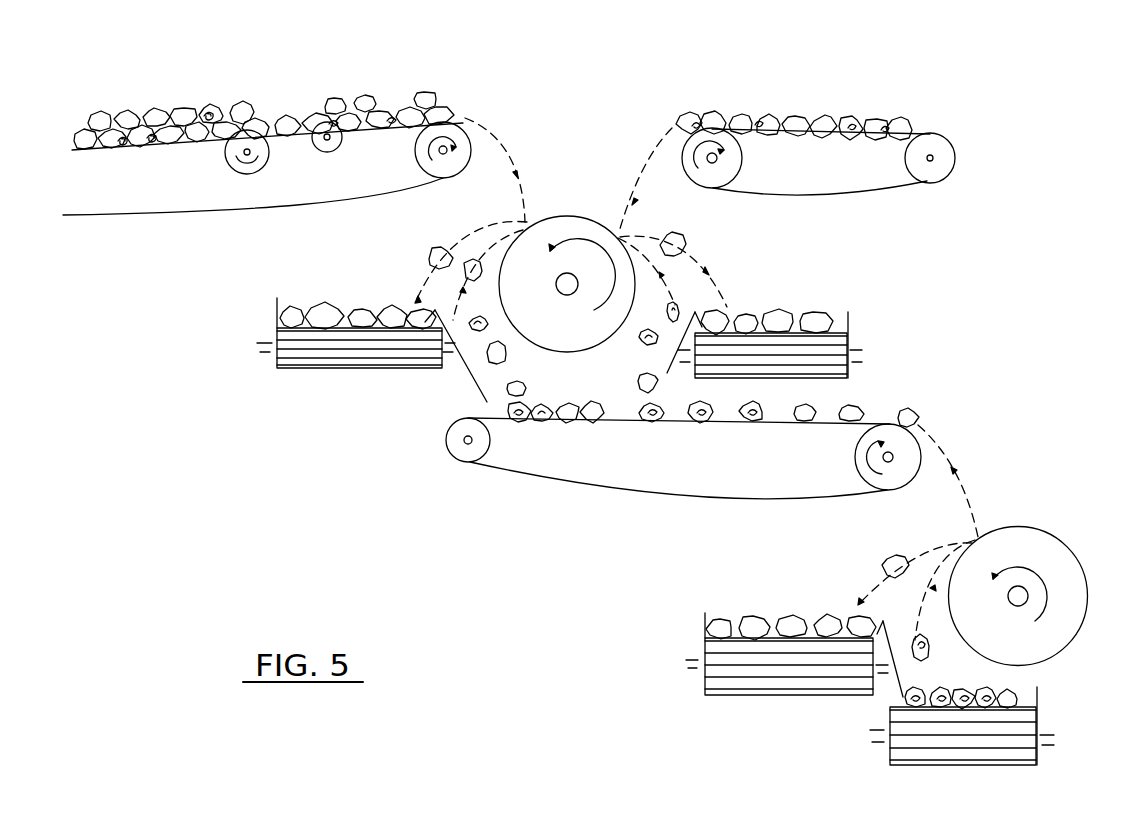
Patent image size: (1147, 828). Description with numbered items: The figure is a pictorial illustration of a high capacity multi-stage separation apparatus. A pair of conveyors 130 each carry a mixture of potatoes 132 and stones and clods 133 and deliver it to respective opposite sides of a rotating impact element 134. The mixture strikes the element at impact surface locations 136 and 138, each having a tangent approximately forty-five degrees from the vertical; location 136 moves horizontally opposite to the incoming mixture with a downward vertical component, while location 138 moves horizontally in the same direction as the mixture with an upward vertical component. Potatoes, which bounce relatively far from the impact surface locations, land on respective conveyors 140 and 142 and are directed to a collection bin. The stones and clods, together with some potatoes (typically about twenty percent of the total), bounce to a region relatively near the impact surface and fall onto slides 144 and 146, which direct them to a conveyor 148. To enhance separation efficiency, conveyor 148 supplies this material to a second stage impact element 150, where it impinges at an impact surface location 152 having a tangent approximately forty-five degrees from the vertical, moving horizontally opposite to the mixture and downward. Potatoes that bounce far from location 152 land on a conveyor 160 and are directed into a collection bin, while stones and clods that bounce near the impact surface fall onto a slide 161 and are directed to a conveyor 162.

The conveyors 130 is at (207, 213).
The potatoes 132 is at (467, 118).
The stones and clods 133 is at (205, 124).
The rotating impact element 134 is at (578, 227).
The impact surface location 136 is at (527, 222).
The impact surface location 138 is at (617, 229).
The conveyor 140 is at (277, 310).
The conveyor 142 is at (817, 325).
The slide 144 is at (470, 367).
The slide 146 is at (718, 307).
The conveyor 148 is at (452, 445).
The second stage impact element 150 is at (1058, 552).
The impact surface location 152 is at (977, 540).
The conveyor 160 is at (720, 622).
The slide 161 is at (883, 621).
The conveyor 162 is at (1038, 718).